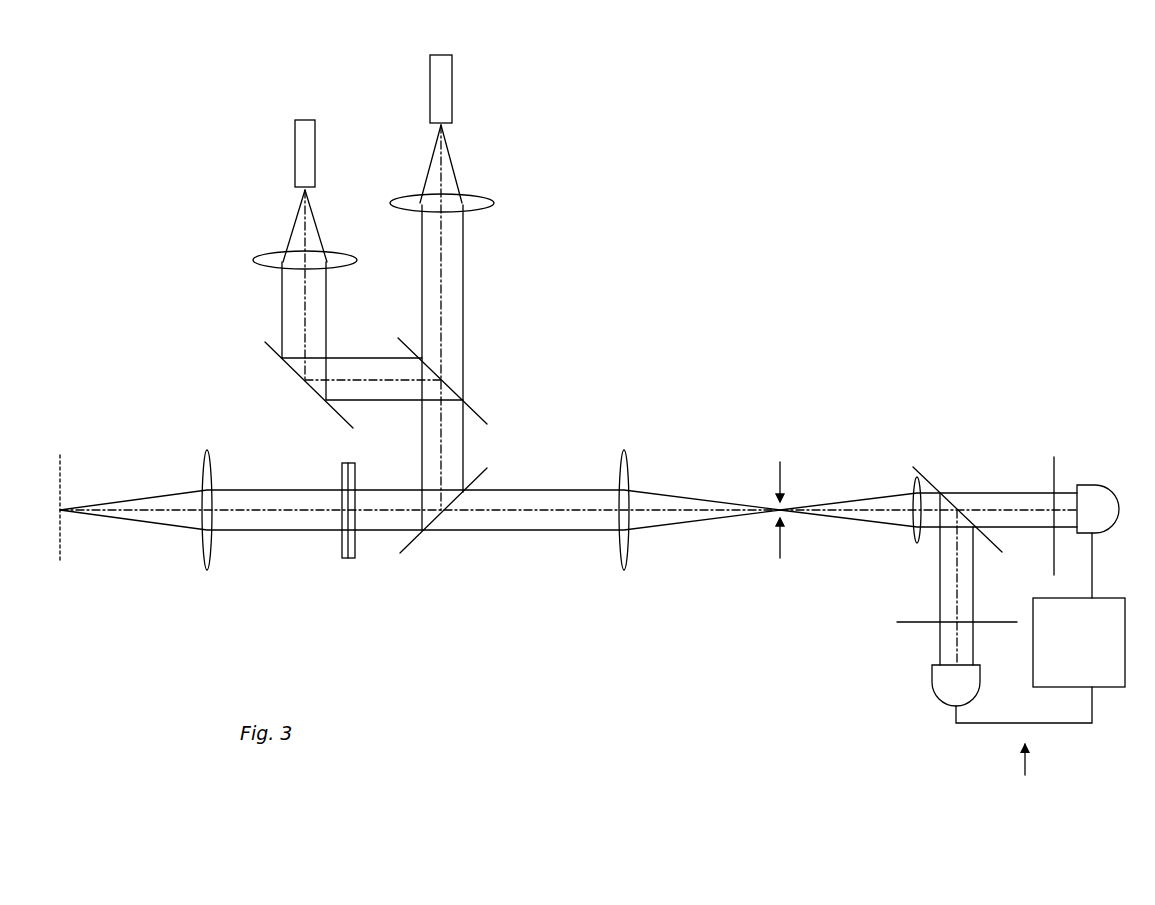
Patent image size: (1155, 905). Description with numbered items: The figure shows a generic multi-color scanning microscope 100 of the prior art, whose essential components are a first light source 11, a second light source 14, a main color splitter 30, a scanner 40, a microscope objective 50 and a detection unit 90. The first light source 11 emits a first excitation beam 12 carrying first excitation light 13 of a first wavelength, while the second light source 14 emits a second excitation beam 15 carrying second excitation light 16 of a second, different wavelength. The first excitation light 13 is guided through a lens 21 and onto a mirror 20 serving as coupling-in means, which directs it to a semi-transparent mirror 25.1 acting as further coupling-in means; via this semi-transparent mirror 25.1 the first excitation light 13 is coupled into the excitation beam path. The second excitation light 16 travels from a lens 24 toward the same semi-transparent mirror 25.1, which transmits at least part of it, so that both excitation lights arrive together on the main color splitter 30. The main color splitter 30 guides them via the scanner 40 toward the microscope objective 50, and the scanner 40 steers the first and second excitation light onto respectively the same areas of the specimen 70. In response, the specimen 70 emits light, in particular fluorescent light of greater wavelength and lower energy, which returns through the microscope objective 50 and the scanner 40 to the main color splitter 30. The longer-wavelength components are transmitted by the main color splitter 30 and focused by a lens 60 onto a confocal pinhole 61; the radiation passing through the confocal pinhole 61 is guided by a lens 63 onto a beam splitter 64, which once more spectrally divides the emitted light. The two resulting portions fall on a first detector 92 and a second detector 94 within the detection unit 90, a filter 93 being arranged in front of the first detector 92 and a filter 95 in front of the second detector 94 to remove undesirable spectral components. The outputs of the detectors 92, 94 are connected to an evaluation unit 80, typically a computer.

The first light source 11 is at (303, 135).
The first excitation beam 12 is at (290, 283).
The first excitation light 13 is at (300, 230).
The second light source 14 is at (447, 65).
The second excitation beam 15 is at (455, 290).
The second excitation light 16 is at (450, 172).
The mirror 20 is at (282, 350).
The lens 21 is at (268, 258).
The lens 24 is at (480, 205).
The semi-transparent mirror 25.1 is at (480, 408).
The main color splitter 30 is at (408, 545).
The scanner 40 is at (350, 560).
The microscope objective 50 is at (205, 540).
The lens 60 is at (628, 545).
The confocal pinhole 61 is at (775, 480).
The lens 63 is at (915, 535).
The beam splitter 64 is at (935, 478).
The specimen 70 is at (60, 548).
The evaluation unit 80 is at (1079, 642).
The detection unit 90 is at (1023, 774).
The first detector 92 is at (1090, 500).
The filter 93 is at (1053, 473).
The second detector 94 is at (945, 688).
The filter 95 is at (905, 623).
The scanning microscope 100 is at (677, 303).